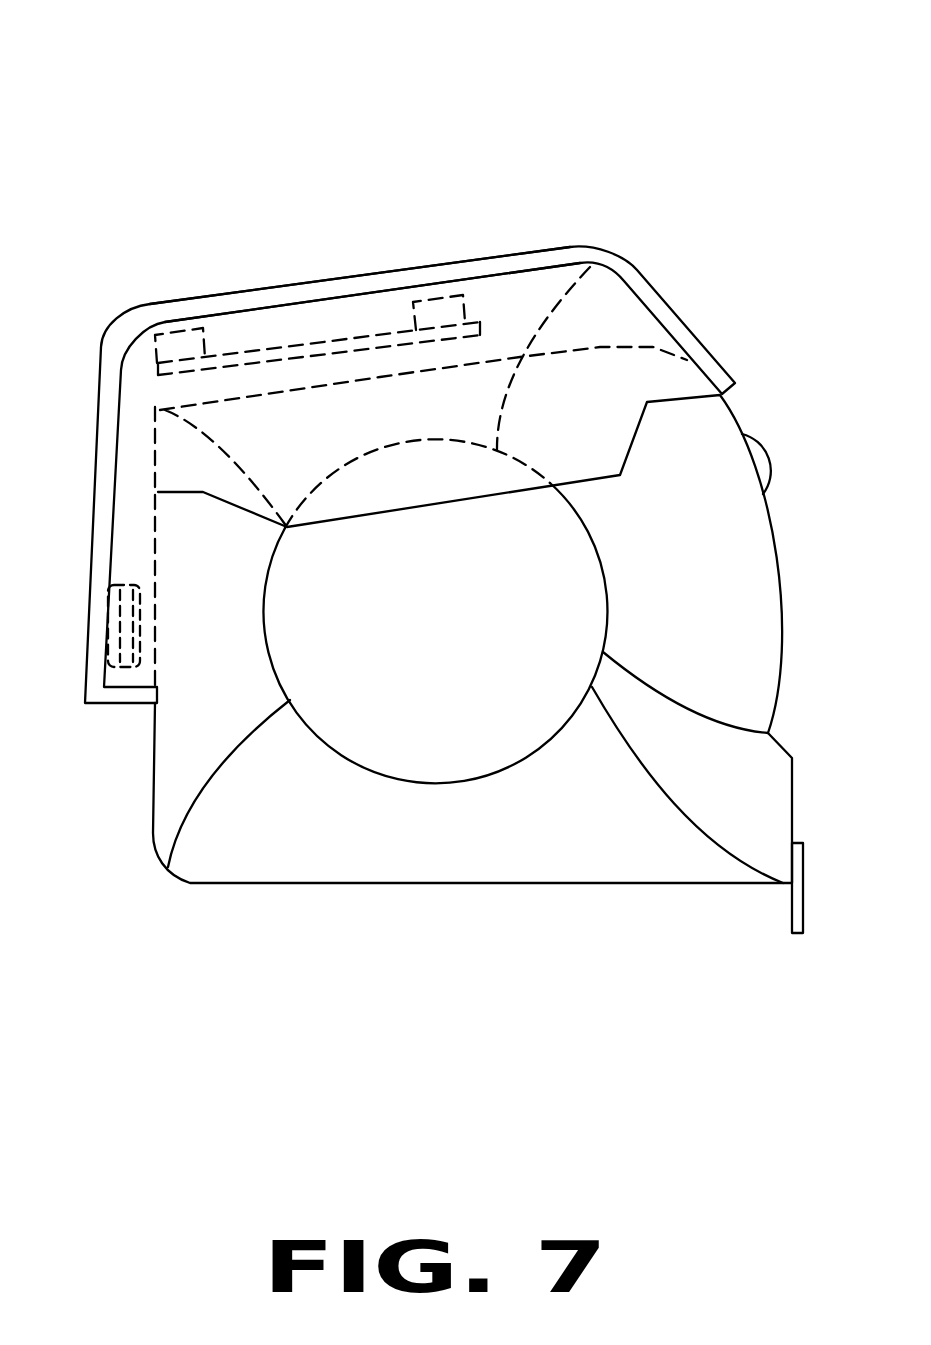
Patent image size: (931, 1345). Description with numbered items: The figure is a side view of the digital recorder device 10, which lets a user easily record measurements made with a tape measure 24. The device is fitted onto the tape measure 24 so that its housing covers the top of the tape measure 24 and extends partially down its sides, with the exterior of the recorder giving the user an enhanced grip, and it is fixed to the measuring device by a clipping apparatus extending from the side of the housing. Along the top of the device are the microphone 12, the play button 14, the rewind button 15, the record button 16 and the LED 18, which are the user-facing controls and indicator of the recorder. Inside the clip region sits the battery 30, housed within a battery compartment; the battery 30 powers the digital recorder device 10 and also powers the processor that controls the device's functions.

The digital recorder device 10 is at (465, 155).
The microphone 12 is at (177, 300).
The play button 14 is at (197, 298).
The rewind button 15 is at (238, 292).
The record button 16 is at (255, 290).
The LED 18 is at (222, 294).
The tape measure 24 is at (497, 832).
The battery 30 is at (130, 653).